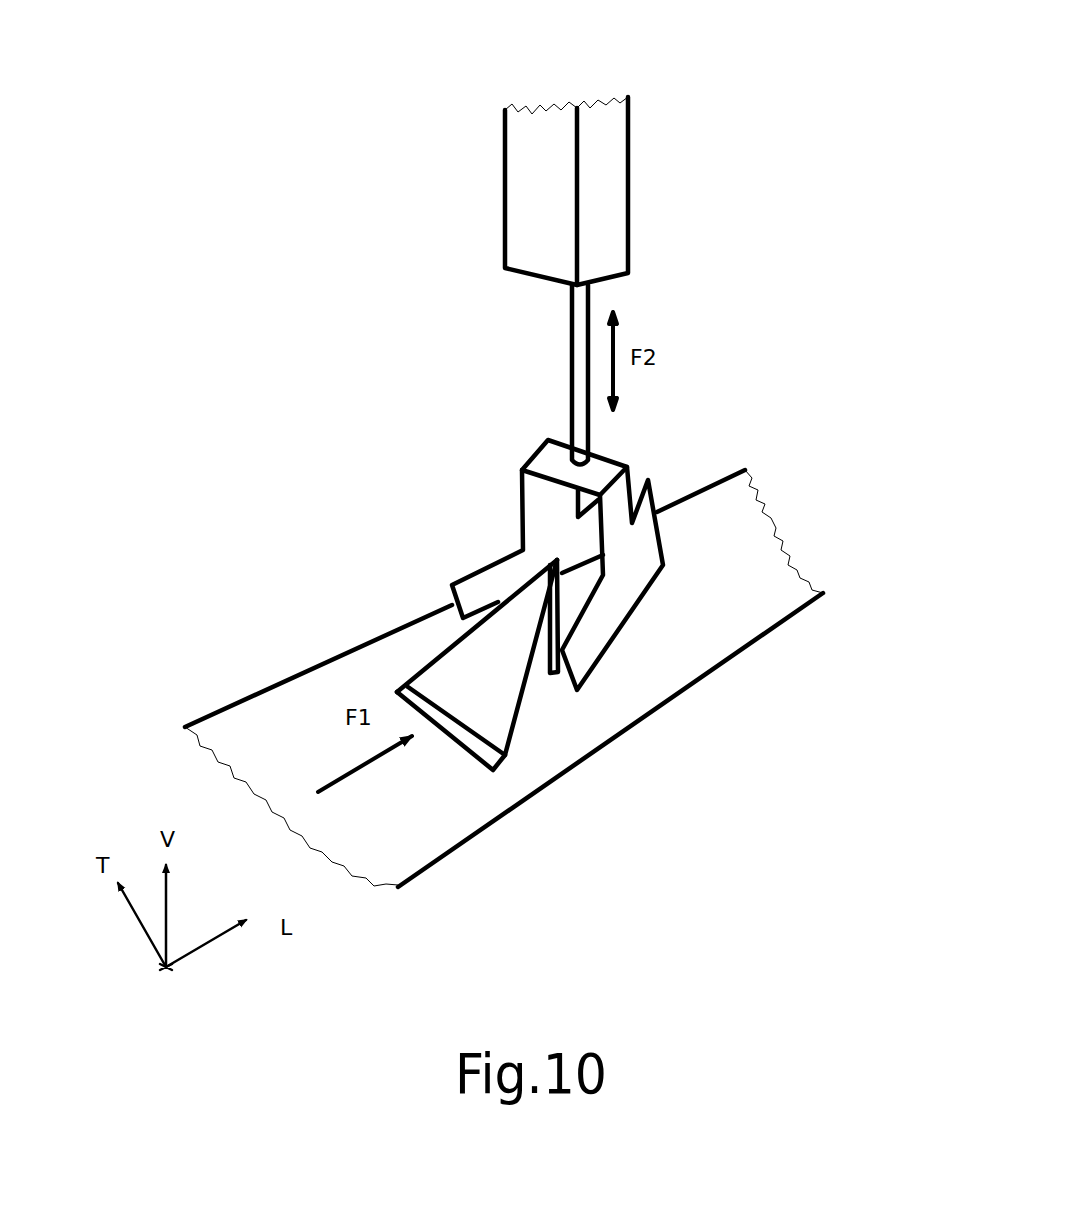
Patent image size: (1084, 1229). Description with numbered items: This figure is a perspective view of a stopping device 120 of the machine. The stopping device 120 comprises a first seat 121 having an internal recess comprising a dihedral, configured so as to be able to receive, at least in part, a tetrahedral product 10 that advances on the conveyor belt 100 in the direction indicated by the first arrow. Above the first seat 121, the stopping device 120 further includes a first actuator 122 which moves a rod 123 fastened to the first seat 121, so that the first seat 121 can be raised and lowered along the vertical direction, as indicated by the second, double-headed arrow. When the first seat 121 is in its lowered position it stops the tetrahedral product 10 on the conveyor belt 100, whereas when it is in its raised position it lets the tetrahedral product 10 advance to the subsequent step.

The tetrahedral product 10 is at (498, 674).
The conveyor belt 100 is at (756, 567).
The stopping device 120 is at (477, 356).
The first seat 121 is at (648, 566).
The first actuator 122 is at (558, 192).
The rod 123 is at (575, 382).